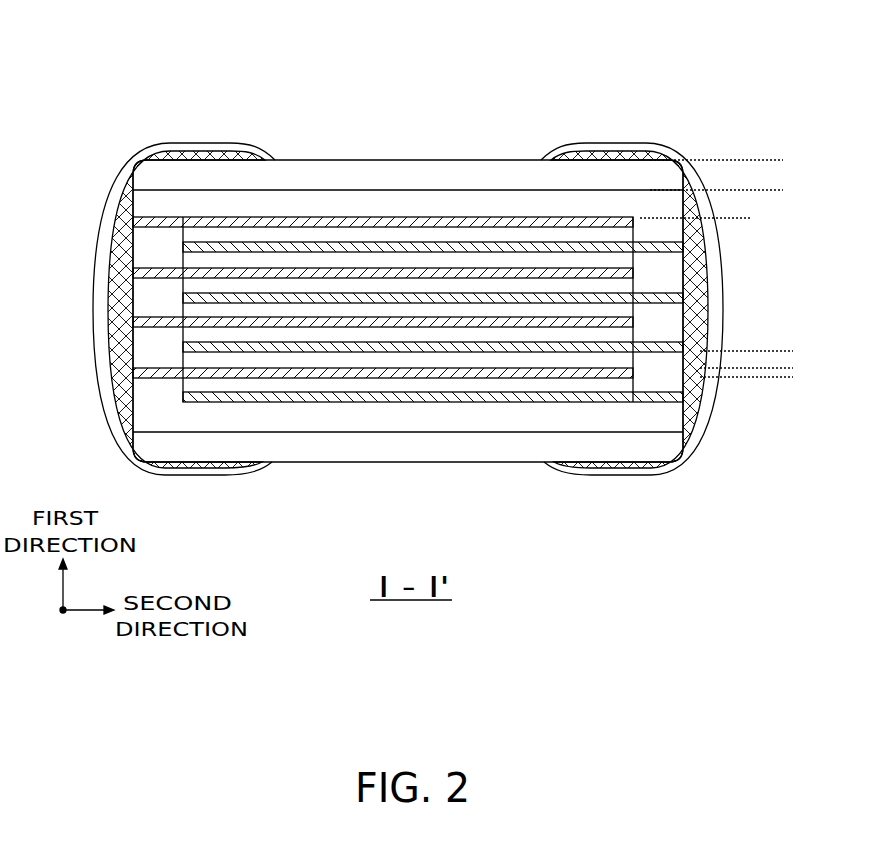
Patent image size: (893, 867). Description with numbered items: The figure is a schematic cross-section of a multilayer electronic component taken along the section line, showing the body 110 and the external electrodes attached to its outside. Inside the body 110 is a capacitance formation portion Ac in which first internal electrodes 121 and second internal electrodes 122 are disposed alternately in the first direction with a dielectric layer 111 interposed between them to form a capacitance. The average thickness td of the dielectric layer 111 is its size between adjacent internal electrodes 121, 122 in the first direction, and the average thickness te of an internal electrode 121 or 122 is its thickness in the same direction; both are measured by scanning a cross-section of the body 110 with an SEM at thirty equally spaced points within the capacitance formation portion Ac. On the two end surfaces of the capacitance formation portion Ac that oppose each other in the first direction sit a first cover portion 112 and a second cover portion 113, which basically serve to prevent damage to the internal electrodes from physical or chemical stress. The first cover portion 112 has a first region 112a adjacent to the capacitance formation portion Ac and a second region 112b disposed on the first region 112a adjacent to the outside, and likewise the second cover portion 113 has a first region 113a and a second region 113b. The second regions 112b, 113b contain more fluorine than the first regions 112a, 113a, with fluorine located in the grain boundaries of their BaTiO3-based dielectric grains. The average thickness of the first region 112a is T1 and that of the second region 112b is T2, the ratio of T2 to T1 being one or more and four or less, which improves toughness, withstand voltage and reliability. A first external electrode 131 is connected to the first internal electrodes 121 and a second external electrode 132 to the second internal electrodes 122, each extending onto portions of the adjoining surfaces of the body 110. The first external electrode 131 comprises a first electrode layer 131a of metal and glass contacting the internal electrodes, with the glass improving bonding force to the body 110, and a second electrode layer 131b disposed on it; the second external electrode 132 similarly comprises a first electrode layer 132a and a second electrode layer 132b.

The body 110 is at (525, 157).
The dielectric layer 111 is at (482, 235).
The first cover portion 112 is at (408, 125).
The first region of the first cover portion 112a is at (345, 62).
The second region of the first cover portion 112b is at (320, 173).
The second cover portion 113 is at (408, 478).
The first region of the second cover portion 113a is at (373, 415).
The second region of the second cover portion 113b is at (340, 514).
The first internal electrode 121 is at (372, 217).
The second internal electrode 122 is at (430, 248).
The first external electrode 131 is at (140, 250).
The first electrode layer 131a is at (55, 281).
The second electrode layer 131b is at (140, 264).
The second external electrode 132 is at (675, 250).
The first electrode layer 132a is at (760, 264).
The second electrode layer 132b is at (760, 292).
The capacitance formation portion Ac is at (181, 334).
The average thickness of the first region T1 is at (728, 190).
The average thickness of the second region T2 is at (770, 160).
The average thickness of the dielectric layer td is at (790, 322).
The average thickness of the internal electrode te is at (742, 340).